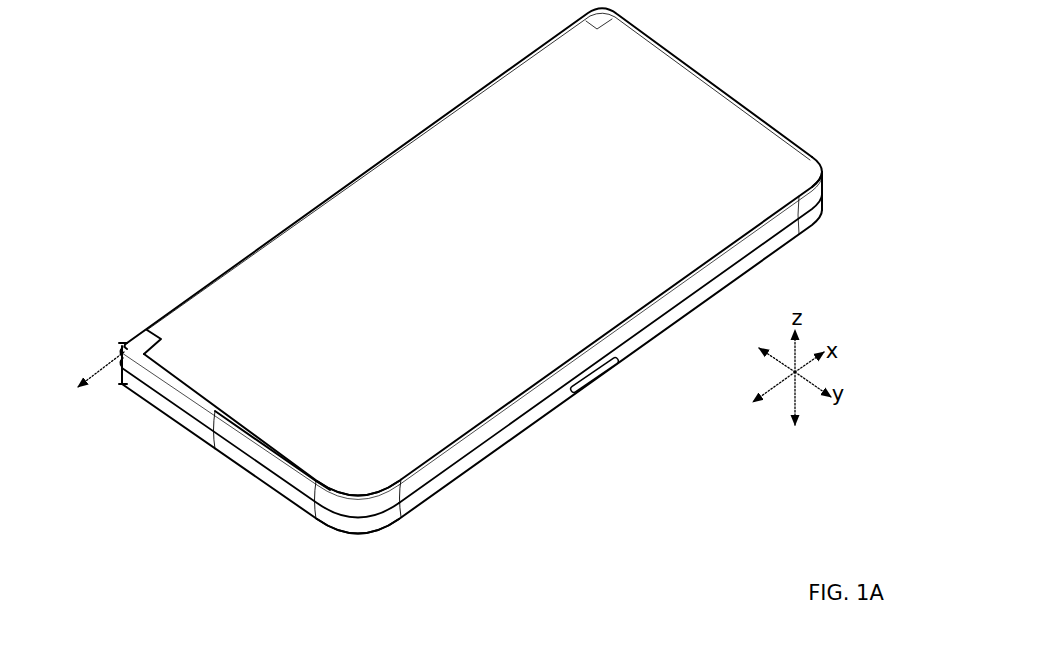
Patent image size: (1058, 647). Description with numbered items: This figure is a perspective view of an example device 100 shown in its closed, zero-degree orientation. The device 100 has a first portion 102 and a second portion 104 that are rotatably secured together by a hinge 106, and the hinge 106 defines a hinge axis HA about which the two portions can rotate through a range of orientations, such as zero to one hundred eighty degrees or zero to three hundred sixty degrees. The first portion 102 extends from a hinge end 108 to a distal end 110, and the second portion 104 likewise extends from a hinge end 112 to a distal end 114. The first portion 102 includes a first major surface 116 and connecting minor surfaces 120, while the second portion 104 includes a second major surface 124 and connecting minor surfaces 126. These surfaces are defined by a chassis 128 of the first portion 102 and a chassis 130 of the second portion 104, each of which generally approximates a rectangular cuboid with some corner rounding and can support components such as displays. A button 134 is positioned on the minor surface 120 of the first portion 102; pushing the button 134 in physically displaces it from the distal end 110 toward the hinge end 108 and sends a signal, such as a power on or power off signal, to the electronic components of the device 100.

The device 100 is at (473, 325).
The first portion 102 is at (828, 213).
The second portion 104 is at (827, 171).
The hinge 106 is at (118, 352).
The hinge end 108 is at (121, 378).
The distal end 110 is at (345, 527).
The hinge end 112 is at (122, 342).
The distal end 114 is at (369, 507).
The first major surface 116 is at (428, 500).
The minor surfaces 120 is at (483, 452).
The second major surface 124 is at (692, 104).
The minor surfaces 126 is at (536, 394).
The chassis 128 is at (231, 450).
The chassis 130 is at (307, 478).
The button 134 is at (618, 363).
The hinge axis HA is at (84, 383).